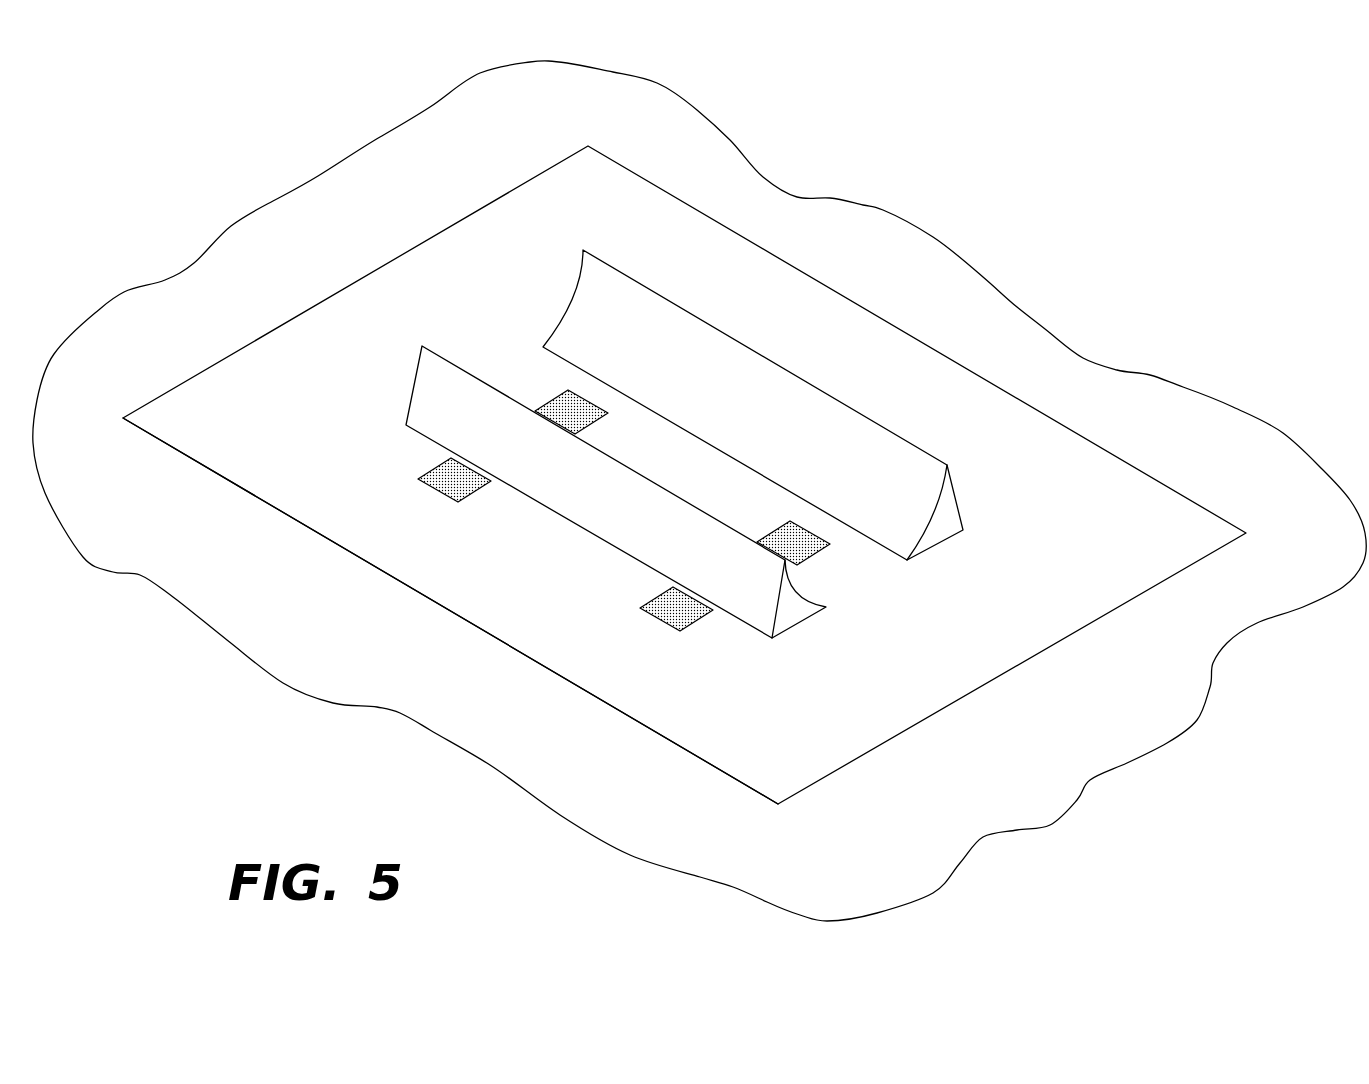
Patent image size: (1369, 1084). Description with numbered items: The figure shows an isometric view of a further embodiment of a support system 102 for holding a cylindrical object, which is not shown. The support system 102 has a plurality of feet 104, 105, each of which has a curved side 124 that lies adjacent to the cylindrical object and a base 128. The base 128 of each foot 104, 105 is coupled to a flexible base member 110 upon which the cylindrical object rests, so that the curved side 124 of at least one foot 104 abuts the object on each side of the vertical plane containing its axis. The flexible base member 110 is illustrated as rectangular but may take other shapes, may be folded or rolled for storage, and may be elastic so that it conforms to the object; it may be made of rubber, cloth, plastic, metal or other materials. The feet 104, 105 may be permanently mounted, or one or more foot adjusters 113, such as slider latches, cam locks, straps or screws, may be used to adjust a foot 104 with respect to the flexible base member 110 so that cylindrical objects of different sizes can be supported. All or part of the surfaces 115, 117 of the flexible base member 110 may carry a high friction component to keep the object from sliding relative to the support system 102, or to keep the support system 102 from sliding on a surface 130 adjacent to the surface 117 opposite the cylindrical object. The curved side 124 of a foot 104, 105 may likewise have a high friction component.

The support system 102 is at (914, 266).
The foot 104 is at (425, 397).
The foot 105 is at (582, 303).
The flexible base member 110 is at (1110, 541).
The foot adjuster 113 is at (443, 485).
The surface 115 is at (360, 543).
The surface 117 is at (443, 607).
The curved side 124 is at (732, 358).
The base 128 is at (740, 623).
The surface 130 is at (1016, 783).